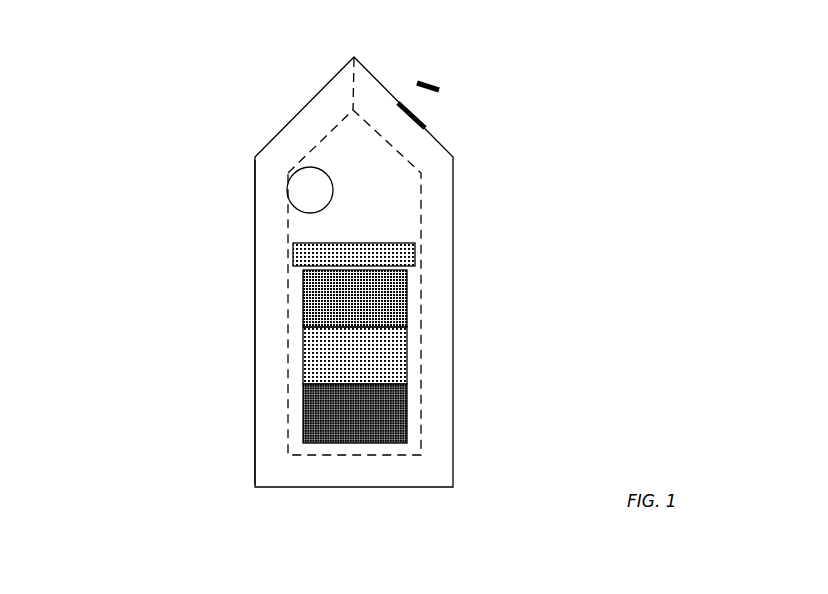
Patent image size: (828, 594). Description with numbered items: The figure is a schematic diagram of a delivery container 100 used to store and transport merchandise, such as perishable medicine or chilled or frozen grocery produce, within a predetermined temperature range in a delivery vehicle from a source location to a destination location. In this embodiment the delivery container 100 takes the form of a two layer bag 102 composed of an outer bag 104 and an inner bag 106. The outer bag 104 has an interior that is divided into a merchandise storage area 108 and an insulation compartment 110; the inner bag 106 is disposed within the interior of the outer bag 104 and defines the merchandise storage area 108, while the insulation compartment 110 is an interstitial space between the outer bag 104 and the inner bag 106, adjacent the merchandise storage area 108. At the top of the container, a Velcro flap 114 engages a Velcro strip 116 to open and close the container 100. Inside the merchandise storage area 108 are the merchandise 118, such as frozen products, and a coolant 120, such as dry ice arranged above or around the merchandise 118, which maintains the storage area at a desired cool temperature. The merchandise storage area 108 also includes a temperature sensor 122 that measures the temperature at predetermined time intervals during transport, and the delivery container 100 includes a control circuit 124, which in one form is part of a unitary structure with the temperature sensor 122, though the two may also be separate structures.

The delivery container 100 is at (212, 56).
The two layer bag 102 is at (206, 478).
The outer bag 104 is at (253, 273).
The inner bag 106 is at (286, 321).
The merchandise storage area 108 is at (392, 194).
The insulation compartment 110 is at (268, 388).
The Velcro flap 114 is at (422, 64).
The Velcro strip 116 is at (439, 119).
The merchandise 118 is at (412, 289).
The coolant 120 is at (420, 254).
The temperature sensor 122 is at (303, 179).
The control circuit 124 is at (310, 193).